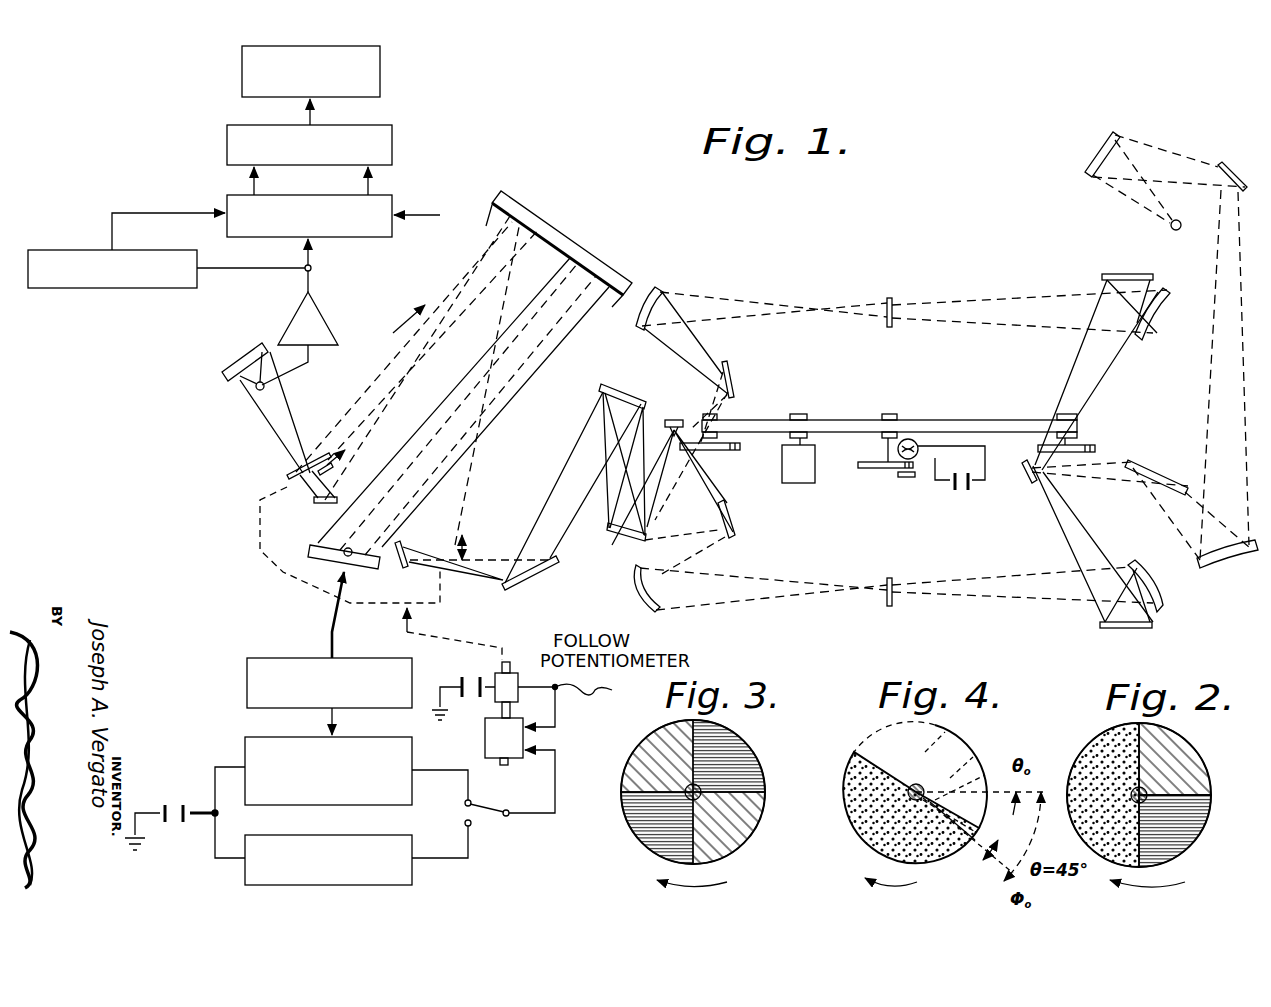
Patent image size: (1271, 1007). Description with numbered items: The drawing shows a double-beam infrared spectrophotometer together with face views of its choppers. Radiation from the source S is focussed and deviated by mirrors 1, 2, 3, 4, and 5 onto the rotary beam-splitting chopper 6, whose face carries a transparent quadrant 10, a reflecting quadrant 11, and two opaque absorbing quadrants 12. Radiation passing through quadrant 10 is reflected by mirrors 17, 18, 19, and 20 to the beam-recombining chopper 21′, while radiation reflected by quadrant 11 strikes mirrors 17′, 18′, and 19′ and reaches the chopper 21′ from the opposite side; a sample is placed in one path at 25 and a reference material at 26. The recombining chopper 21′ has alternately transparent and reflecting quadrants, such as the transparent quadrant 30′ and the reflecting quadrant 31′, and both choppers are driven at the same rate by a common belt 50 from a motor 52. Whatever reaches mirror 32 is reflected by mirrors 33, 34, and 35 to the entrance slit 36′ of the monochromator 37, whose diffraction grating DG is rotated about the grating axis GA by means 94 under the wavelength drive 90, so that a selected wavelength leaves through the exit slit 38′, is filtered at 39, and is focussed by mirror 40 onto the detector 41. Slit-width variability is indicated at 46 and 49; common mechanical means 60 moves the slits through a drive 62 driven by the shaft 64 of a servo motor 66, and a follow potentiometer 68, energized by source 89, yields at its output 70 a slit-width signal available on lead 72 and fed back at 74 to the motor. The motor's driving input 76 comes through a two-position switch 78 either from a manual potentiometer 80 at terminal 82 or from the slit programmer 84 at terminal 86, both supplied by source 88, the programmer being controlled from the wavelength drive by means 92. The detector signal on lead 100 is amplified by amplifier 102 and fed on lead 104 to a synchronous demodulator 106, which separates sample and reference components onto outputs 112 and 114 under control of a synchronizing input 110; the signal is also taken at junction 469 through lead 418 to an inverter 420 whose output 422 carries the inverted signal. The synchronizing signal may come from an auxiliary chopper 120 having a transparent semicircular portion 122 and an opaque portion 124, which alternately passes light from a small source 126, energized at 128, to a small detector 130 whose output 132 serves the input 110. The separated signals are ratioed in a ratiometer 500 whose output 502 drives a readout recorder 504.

In FIG. 1, the mirror 1 is at (1090, 160).
In FIG. 1, the mirror 2 is at (1235, 166).
In FIG. 1, the mirror 3 is at (1235, 558).
In FIG. 1, the mirror 4 is at (1150, 462).
In FIG. 1, the mirror 5 is at (1032, 486).
In FIG. 1, the rotary beam splitting chopper 6 is at (1090, 445).
In FIG. 2, the rotary beam splitting chopper 6 is at (1208, 850).
In FIG. 2, the transparent quadrant 10 is at (1185, 767).
In FIG. 2, the reflecting quadrant 11 is at (1200, 822).
In FIG. 2, the opaque absorbing quadrants 12 is at (1105, 752).
In FIG. 1, the mirror 17 is at (1130, 272).
In FIG. 1, the mirror 17′ is at (1130, 630).
In FIG. 1, the mirror 18 is at (1153, 333).
In FIG. 1, the mirror 18′ is at (1160, 600).
In FIG. 1, the mirror 19 is at (660, 290).
In FIG. 1, the mirror 19′ is at (640, 582).
In FIG. 1, the mirror 20 is at (733, 375).
In FIG. 1, the beam recombining chopper 21′ is at (730, 452).
In FIG. 3, the beam recombining chopper 21′ is at (640, 848).
In FIG. 1, the sample 25 is at (895, 585).
In FIG. 1, the reference material 26 is at (892, 300).
In FIG. 3, the transparent quadrant 30′ is at (745, 828).
In FIG. 3, the reflecting portion 31′ is at (745, 752).
In FIG. 1, the mirror 32 is at (672, 418).
In FIG. 1, the mirror 33 is at (625, 540).
In FIG. 1, the mirror 34 is at (615, 386).
In FIG. 1, the mirror 35 is at (545, 572).
In FIG. 1, the entrance slit 36′ is at (440, 580).
In FIG. 1, the monochromator 37 is at (395, 326).
In FIG. 1, the exit slit 38′ is at (302, 507).
In FIG. 1, the filters 39 is at (287, 463).
In FIG. 1, the mirror 40 is at (232, 357).
In FIG. 1, the detector 41 is at (257, 389).
In FIG. 1, the slit width variability 46 is at (468, 542).
In FIG. 1, the slit width variability 49 is at (333, 452).
In FIG. 1, the common drive belt 50 is at (770, 418).
In FIG. 1, the motor 52 is at (800, 483).
In FIG. 1, the common mechanical means 60 is at (285, 572).
In FIG. 1, the mechanical drive 62 is at (457, 638).
In FIG. 1, the shaft 64 is at (512, 665).
In FIG. 1, the servo motor 66 is at (485, 750).
In FIG. 1, the follow potentiometer 68 is at (490, 702).
In FIG. 1, the potentiometer output 70 is at (583, 682).
In FIG. 1, the slit width potentiometer output lead 72 is at (615, 711).
In FIG. 1, the feedback connection 74 is at (558, 724).
In FIG. 1, the primary driving input 76 is at (545, 815).
In FIG. 1, the two-position switch 78 is at (492, 820).
In FIG. 1, the manually adjustable potentiometer 80 is at (245, 882).
In FIG. 1, the terminal 82 is at (470, 830).
In FIG. 1, the monochromator slit programmer 84 is at (245, 750).
In FIG. 1, the terminal 86 is at (478, 806).
In FIG. 1, the d.c. source 88 is at (185, 833).
In FIG. 1, the source 89 is at (463, 676).
In FIG. 1, the wavelength drive 90 is at (262, 658).
In FIG. 1, the control means 92 is at (327, 718).
In FIG. 1, the grating rotating means 94 is at (330, 617).
In FIG. 1, the detector lead 100 is at (292, 373).
In FIG. 1, the amplifier 102 is at (328, 328).
In FIG. 1, the amplified signal lead 104 is at (310, 280).
In FIG. 1, the synchronous demodulator 106 is at (392, 232).
In FIG. 1, the synchronizing input 110 is at (428, 215).
In FIG. 1, the demodulator output 112 is at (372, 182).
In FIG. 1, the demodulator output 114 is at (250, 182).
In FIG. 1, the auxiliary synchronizing signal chopper 120 is at (878, 470).
In FIG. 4, the auxiliary synchronizing signal chopper 120 is at (856, 858).
In FIG. 4, the transparent semicircular portion 122 is at (958, 742).
In FIG. 4, the opaque semicircular portion 124 is at (942, 850).
In FIG. 1, the small light source 126 is at (922, 440).
In FIG. 1, the energizing source 128 is at (968, 492).
In FIG. 1, the small detector 130 is at (912, 480).
In FIG. 1, the synchronizing detector output 132 is at (905, 485).
In FIG. 1, the lead 418 is at (245, 268).
In FIG. 1, the inverter 420 is at (60, 250).
In FIG. 1, the inverter output 422 is at (142, 212).
In FIG. 1, the junction 469 is at (312, 268).
In FIG. 1, the ratiometer 500 is at (227, 140).
In FIG. 1, the ratio output 502 is at (318, 118).
In FIG. 1, the readout 504 is at (242, 78).
In FIG. 1, the infrared source S is at (1180, 230).
In FIG. 1, the grating axis GA is at (350, 550).
In FIG. 1, the diffraction grating DG is at (310, 551).